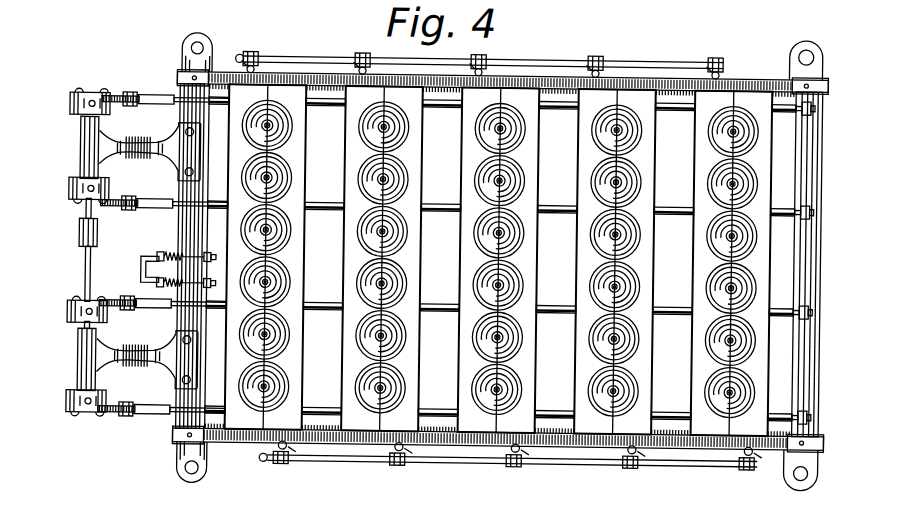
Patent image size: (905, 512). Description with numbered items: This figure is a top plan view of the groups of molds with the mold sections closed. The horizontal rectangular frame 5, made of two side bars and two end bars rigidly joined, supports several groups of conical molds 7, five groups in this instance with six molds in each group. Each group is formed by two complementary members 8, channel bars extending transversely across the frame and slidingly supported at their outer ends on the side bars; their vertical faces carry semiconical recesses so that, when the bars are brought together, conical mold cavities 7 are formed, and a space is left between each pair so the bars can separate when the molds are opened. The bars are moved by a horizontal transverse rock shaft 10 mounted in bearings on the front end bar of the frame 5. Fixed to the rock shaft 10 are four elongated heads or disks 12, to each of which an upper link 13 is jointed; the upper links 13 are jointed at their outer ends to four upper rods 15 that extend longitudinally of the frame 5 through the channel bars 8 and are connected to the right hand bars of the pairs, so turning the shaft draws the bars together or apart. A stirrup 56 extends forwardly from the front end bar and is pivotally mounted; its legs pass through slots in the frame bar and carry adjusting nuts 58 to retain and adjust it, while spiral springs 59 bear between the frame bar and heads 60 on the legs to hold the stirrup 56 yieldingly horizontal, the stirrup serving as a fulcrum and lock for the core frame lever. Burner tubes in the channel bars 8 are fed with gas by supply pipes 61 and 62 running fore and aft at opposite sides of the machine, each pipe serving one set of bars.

The horizontal rectangular frame 5 is at (730, 76).
The conical mold 7 is at (291, 174).
The complementary member (channel bar) 8 is at (463, 148).
The rock shaft 10 is at (85, 219).
The elongated head or disk 12 is at (68, 113).
The upper link 13 is at (108, 99).
The upper rod 15 is at (177, 102).
The stirrup 56 is at (141, 271).
The adjusting nut 58 is at (208, 257).
The spiral spring 59 is at (172, 243).
The head 60 is at (157, 258).
The supply pipe 61 is at (322, 39).
The supply pipe 62 is at (372, 464).